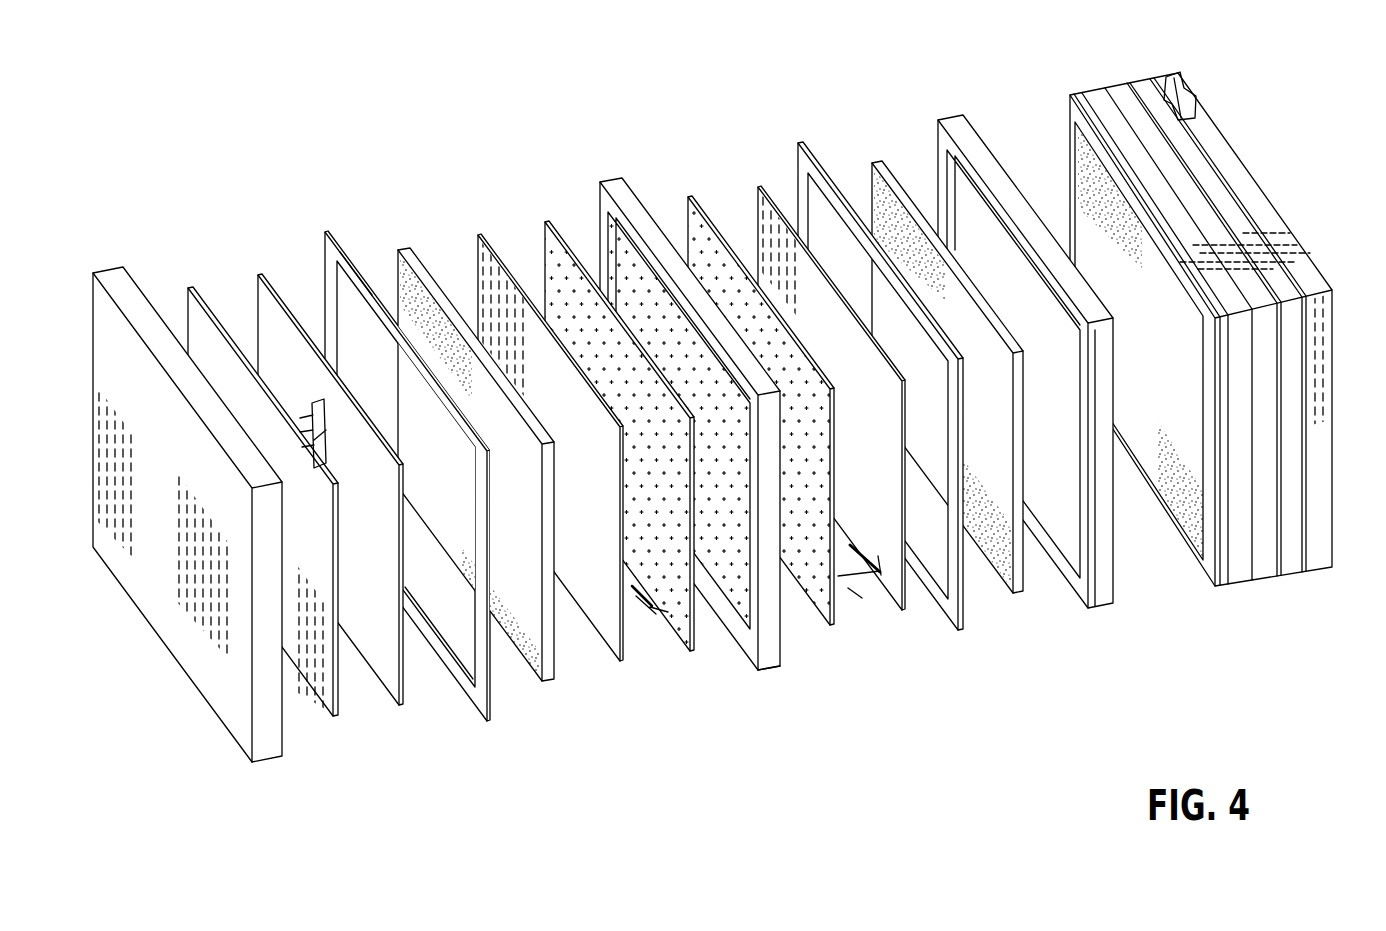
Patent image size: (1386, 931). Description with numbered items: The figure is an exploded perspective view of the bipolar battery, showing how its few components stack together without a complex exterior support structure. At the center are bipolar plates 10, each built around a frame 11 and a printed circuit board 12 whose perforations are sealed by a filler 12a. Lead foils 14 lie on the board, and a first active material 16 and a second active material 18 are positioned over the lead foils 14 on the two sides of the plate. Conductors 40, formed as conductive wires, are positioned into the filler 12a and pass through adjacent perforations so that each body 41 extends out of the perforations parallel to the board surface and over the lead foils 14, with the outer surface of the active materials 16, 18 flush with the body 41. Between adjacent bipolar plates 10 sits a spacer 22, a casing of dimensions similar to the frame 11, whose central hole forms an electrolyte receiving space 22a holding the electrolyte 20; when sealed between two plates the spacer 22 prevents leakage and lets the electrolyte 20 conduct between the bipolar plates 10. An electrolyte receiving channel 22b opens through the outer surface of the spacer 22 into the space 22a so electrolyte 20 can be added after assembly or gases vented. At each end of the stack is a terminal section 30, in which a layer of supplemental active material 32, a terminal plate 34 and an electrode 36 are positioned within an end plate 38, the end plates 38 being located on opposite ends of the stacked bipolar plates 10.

The bipolar plate 10 is at (796, 422).
The frame 11 is at (762, 670).
The printed circuit board 12 is at (617, 243).
The filler 12a is at (857, 593).
The lead foil 14 is at (689, 470).
The first active material 16 is at (620, 662).
The second active material 18 is at (702, 442).
The electrolyte 20 is at (740, 424).
The spacer 22 is at (740, 424).
The electrolyte receiving space 22a is at (463, 658).
The electrolyte receiving channel 22b is at (357, 265).
The terminal section 30 is at (275, 246).
The supplemental active material 32 is at (403, 707).
The terminal plate 34 is at (333, 715).
The electrode 36 is at (322, 410).
The end plate 38 is at (255, 764).
The conductor 40 is at (655, 600).
The body 41 is at (636, 592).